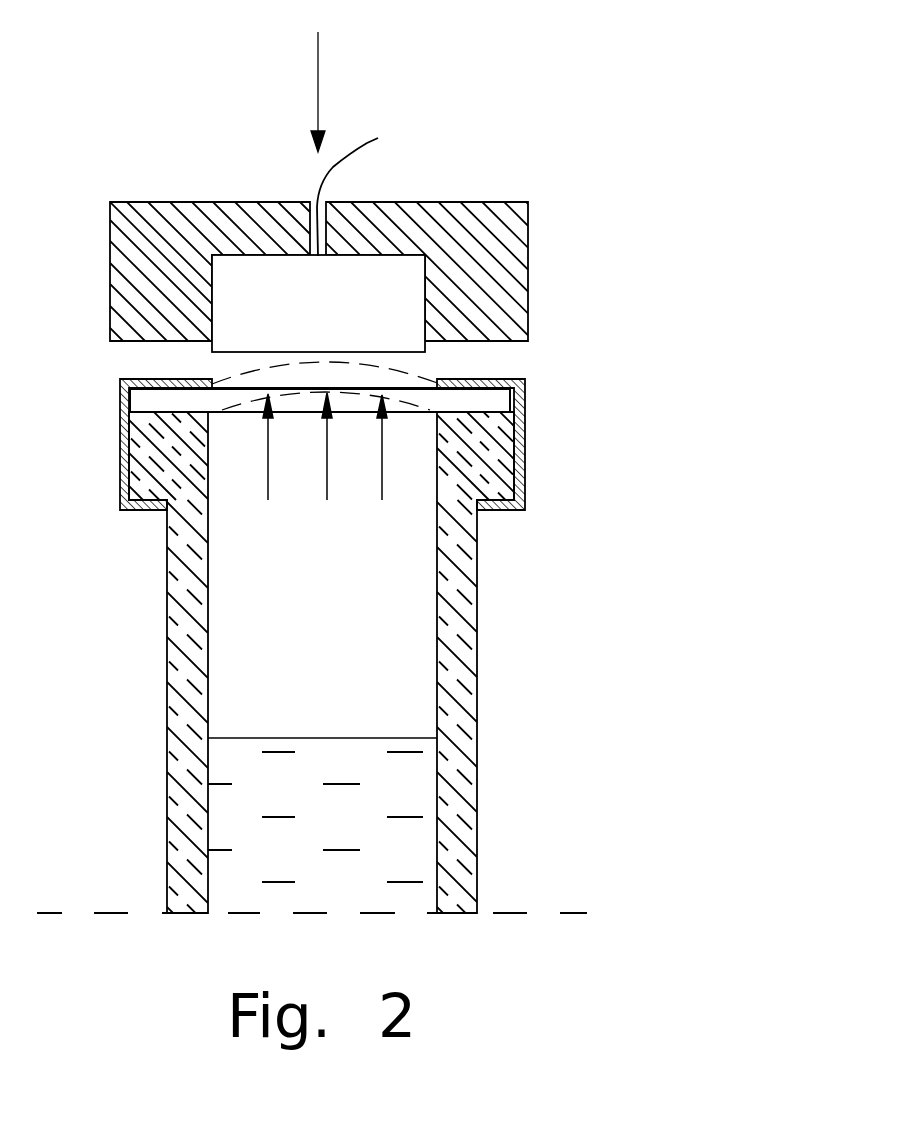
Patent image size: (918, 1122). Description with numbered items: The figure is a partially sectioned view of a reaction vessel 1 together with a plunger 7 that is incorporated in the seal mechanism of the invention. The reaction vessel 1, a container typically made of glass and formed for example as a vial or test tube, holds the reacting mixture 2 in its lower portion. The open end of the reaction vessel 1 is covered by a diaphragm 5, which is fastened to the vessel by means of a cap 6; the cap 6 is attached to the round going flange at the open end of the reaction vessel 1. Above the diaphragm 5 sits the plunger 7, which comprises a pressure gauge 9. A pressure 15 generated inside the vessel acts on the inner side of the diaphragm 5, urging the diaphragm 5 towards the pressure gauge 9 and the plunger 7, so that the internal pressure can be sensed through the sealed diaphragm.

The reaction vessel 1 is at (477, 660).
The reacting mixture 2 is at (387, 882).
The diaphragm 5 is at (527, 378).
The cap 6 is at (525, 458).
The plunger 7 is at (528, 270).
The pressure gauge 9 is at (332, 322).
The pressure 15 is at (268, 483).